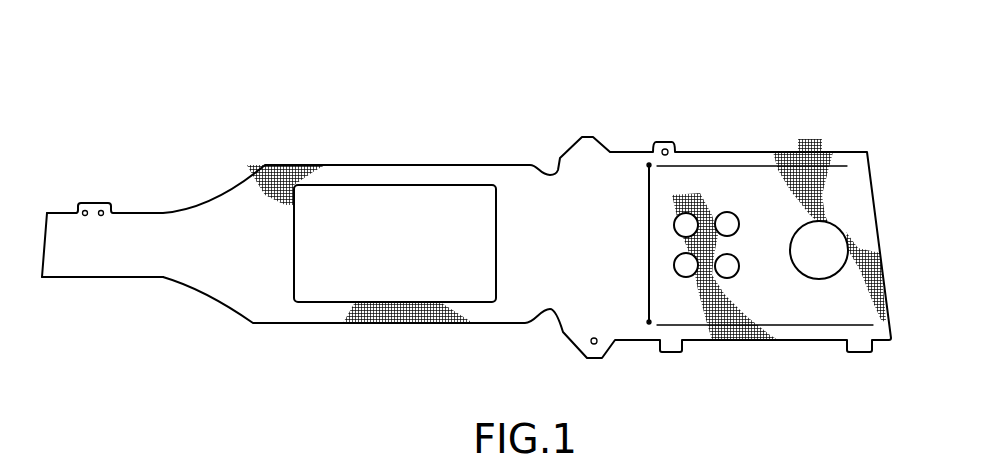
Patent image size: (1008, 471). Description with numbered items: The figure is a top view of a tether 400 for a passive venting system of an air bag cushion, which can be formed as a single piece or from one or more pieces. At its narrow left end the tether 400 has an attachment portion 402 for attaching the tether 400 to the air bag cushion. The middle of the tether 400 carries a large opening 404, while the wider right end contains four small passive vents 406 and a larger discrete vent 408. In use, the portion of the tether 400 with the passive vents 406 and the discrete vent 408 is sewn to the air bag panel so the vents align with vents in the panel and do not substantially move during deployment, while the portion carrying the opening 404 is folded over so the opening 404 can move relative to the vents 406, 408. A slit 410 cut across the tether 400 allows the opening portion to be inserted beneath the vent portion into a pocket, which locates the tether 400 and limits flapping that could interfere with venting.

The tether 400 is at (230, 110).
The attachment portion 402 is at (87, 250).
The opening 404 is at (392, 272).
The passive vent 406 is at (689, 218).
The discrete vent 408 is at (815, 258).
The slit 410 is at (647, 240).